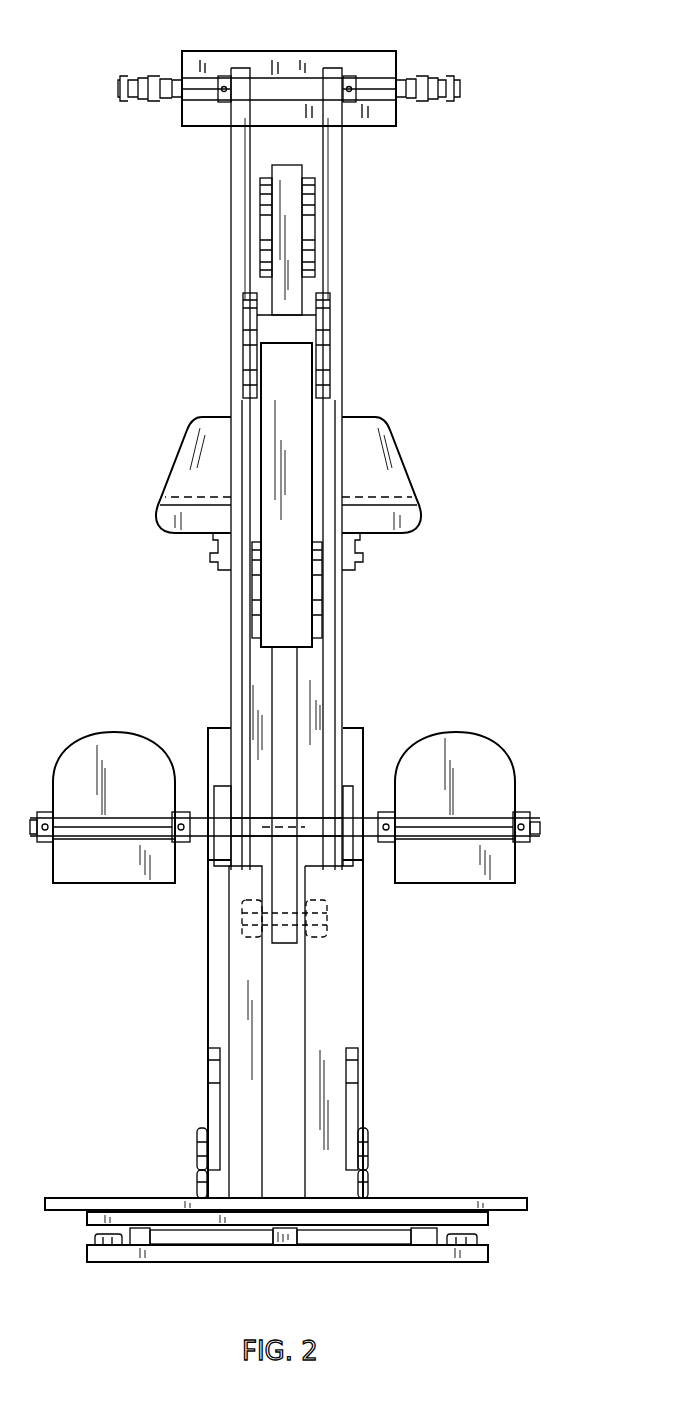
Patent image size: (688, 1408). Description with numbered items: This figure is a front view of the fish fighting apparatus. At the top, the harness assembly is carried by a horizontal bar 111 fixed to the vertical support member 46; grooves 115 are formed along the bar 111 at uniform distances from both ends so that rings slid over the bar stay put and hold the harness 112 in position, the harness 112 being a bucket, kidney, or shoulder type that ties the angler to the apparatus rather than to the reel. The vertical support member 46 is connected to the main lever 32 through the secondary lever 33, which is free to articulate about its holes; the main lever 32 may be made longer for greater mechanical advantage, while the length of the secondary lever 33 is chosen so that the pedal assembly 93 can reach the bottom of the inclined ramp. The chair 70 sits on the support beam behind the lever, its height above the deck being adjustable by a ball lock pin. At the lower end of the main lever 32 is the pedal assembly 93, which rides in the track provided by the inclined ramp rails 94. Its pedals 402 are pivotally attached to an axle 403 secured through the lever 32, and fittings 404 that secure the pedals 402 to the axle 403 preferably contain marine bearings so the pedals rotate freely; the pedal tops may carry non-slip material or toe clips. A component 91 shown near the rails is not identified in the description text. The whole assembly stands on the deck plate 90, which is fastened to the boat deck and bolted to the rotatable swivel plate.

The harness 112 is at (291, 51).
The horizontal bar 111 is at (462, 92).
The grooves 115 is at (135, 78).
The vertical support member 46 is at (242, 265).
The secondary lever 33 is at (267, 200).
The main lever 32 is at (282, 717).
The chair 70 is at (367, 417).
The inclined ramp rails 94 is at (252, 1035).
The pedals 402 is at (90, 732).
The pedal assembly 93 is at (522, 812).
The axle 403 is at (540, 828).
The fittings 404 is at (522, 843).
The guides 91 is at (224, 835).
The deck plate 90 is at (473, 1255).